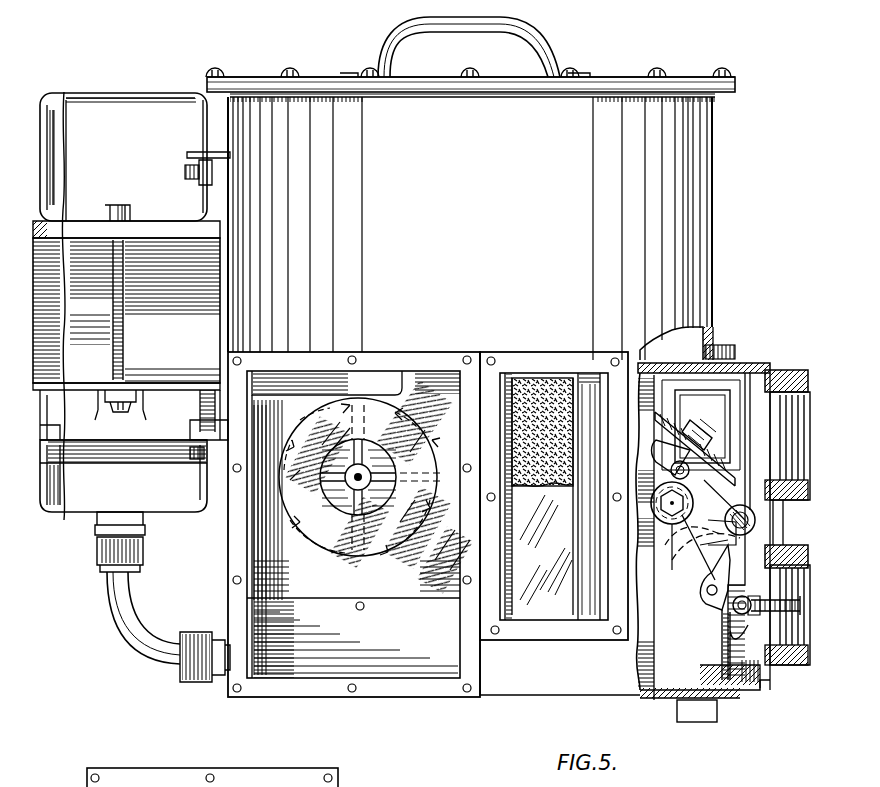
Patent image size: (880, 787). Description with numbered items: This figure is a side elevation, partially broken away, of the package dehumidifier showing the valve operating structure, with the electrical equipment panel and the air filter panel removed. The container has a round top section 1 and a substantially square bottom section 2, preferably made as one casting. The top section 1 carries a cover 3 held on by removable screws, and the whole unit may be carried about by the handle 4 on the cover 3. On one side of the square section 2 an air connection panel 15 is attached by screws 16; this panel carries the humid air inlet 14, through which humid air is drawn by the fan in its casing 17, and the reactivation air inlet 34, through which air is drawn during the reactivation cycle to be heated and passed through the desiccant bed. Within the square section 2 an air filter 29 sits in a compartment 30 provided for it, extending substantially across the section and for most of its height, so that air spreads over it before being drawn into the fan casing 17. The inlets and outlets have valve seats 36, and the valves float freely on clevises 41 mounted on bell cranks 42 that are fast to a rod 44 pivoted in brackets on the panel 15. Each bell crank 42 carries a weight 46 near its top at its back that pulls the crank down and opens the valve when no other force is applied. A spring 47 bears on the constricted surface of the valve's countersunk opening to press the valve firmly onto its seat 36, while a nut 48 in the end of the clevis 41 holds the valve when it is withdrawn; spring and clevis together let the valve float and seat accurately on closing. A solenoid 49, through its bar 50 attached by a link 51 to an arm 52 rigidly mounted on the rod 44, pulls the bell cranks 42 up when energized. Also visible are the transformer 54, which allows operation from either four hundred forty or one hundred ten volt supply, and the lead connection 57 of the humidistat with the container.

The top section 1 is at (470, 381).
The bottom section 2 is at (230, 550).
The cover 3 is at (615, 78).
The handle 4 is at (555, 50).
The humid air inlet 14 is at (800, 372).
The air connection panel 15 is at (750, 672).
The screws 16 is at (330, 540).
The fan casing 17 is at (343, 572).
The air filter 29 is at (542, 491).
The filter compartment 30 is at (510, 603).
The reactivation air inlet 34 is at (795, 668).
The valve seat 36 is at (768, 372).
The clevis 41 is at (735, 612).
The bell crank 42 is at (708, 598).
The rod 44 is at (755, 517).
The weight 46 is at (660, 505).
The spring 47 is at (760, 596).
The nut 48 is at (710, 418).
The solenoid 49 is at (722, 400).
The solenoid bar 50 is at (646, 549).
The link 51 is at (695, 563).
The arm 52 is at (700, 575).
The transformer 54 is at (132, 128).
The humidistat lead connection 57 is at (190, 682).